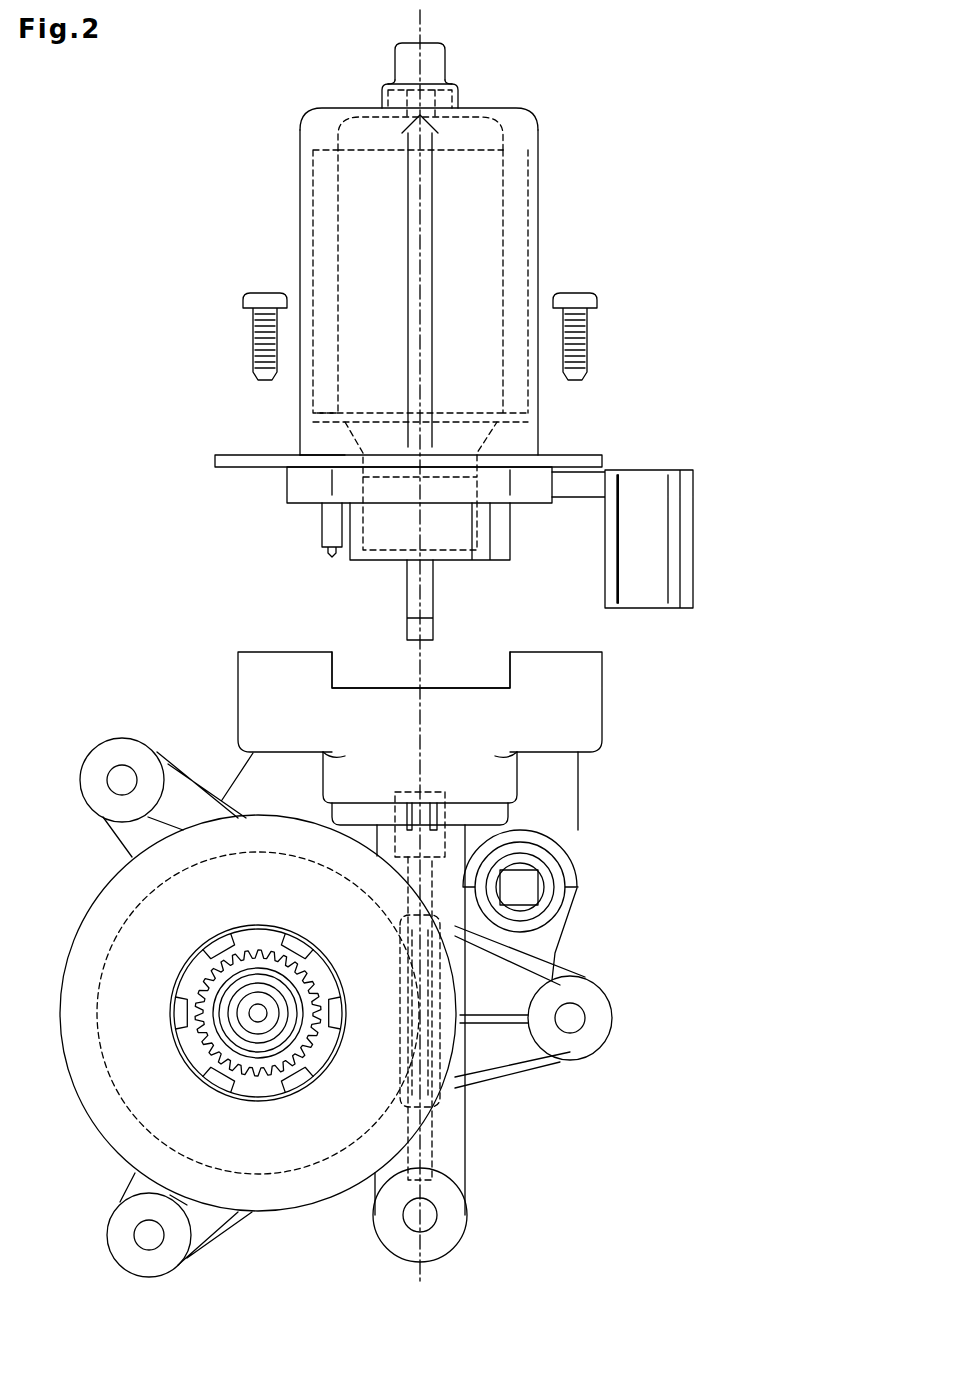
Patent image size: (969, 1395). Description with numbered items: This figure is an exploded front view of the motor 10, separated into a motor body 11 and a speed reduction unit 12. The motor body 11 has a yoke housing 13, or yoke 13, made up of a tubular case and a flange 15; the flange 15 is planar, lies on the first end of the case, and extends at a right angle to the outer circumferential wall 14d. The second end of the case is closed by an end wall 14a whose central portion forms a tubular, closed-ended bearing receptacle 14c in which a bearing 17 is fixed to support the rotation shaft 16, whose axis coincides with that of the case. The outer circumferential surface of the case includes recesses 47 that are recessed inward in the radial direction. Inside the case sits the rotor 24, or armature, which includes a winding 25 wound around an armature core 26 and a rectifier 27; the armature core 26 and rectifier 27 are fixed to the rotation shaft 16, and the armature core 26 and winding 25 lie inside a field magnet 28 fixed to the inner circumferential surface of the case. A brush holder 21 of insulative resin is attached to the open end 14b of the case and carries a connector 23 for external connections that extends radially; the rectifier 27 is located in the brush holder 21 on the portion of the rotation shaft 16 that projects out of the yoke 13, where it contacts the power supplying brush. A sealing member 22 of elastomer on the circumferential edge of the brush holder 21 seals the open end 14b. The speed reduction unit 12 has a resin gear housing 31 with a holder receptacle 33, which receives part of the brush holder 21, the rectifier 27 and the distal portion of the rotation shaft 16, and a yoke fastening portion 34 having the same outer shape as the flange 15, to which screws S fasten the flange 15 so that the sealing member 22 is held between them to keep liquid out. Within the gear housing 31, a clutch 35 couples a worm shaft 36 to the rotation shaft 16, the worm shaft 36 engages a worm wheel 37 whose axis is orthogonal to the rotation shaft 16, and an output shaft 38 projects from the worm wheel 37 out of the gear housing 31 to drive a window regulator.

The motor apparatus 10 is at (692, 372).
The motor body 11 is at (540, 165).
The speed reduction unit 12 is at (238, 683).
The yoke housing 13 is at (540, 187).
The end wall 14a is at (492, 101).
The open end 14b is at (316, 469).
The bearing receptacle 14c is at (462, 92).
The outer circumferential wall 14d is at (302, 230).
The flange 15 is at (256, 455).
The rotation shaft 16 is at (433, 590).
The bearing 17 is at (383, 97).
The brush holder 21 is at (500, 561).
The sealing member 22 is at (536, 500).
The connector 23 is at (694, 510).
The rotor 24 is at (337, 182).
The winding 25 is at (338, 135).
The armature core 26 is at (503, 220).
The rectifier 27 is at (378, 556).
The field magnet 28 is at (528, 247).
The gear housing 31 is at (578, 802).
The holder receptacle 33 is at (602, 692).
The yoke fastening portion 34 is at (312, 652).
The clutch 35 is at (432, 792).
The worm shaft 36 is at (440, 990).
The worm wheel 37 is at (96, 982).
The output shaft 38 is at (258, 952).
The recesses 47 is at (432, 282).
The screws S is at (253, 340).